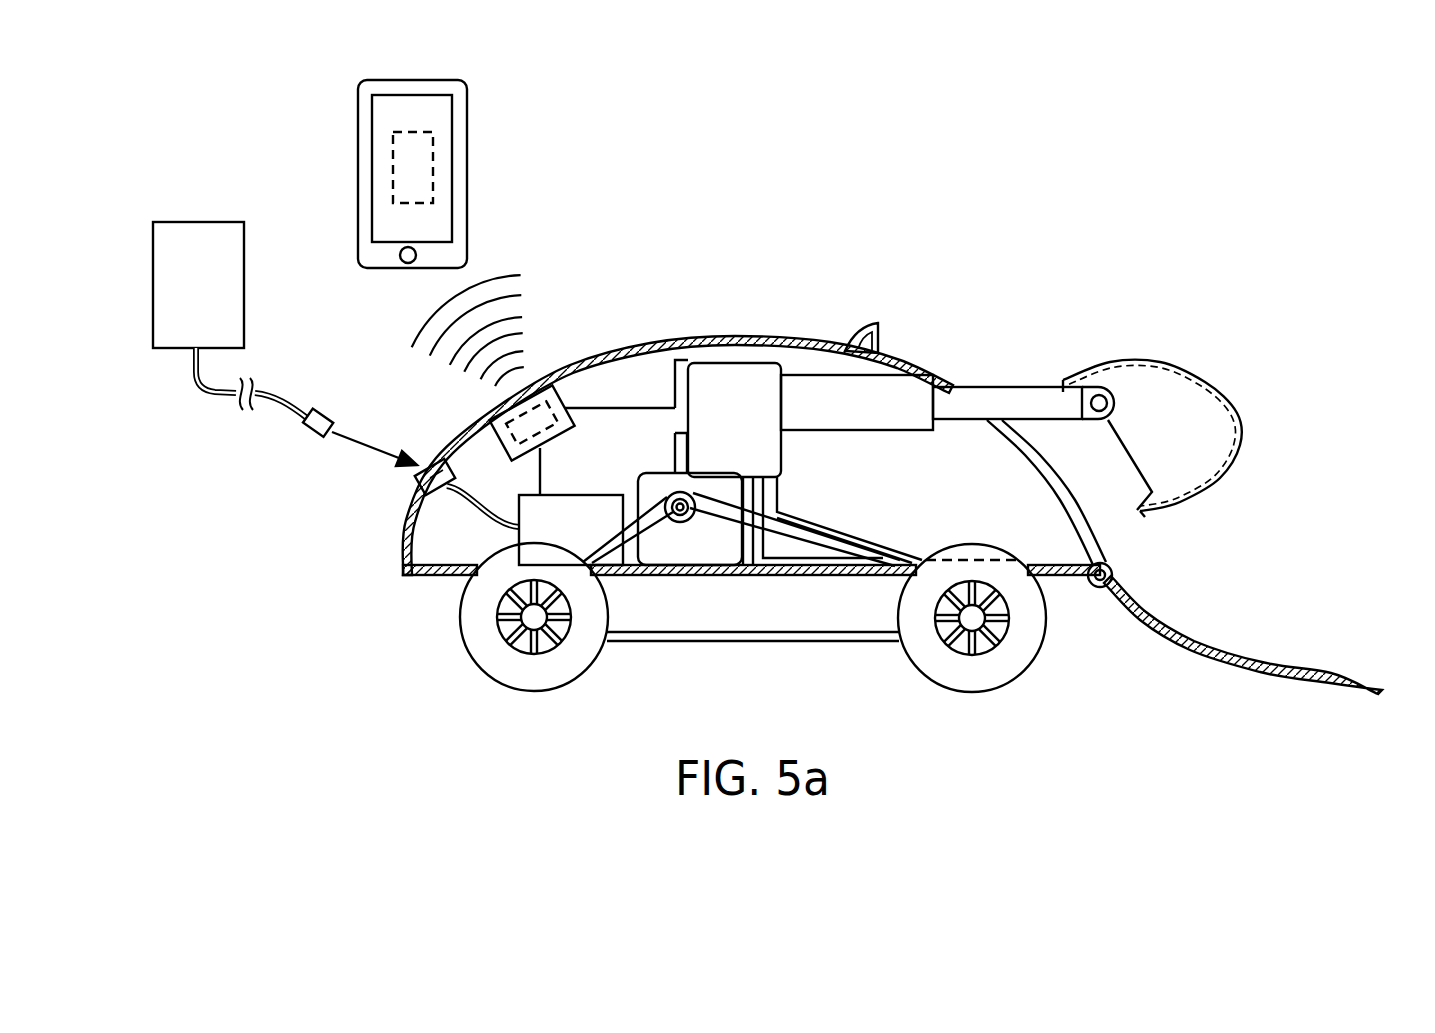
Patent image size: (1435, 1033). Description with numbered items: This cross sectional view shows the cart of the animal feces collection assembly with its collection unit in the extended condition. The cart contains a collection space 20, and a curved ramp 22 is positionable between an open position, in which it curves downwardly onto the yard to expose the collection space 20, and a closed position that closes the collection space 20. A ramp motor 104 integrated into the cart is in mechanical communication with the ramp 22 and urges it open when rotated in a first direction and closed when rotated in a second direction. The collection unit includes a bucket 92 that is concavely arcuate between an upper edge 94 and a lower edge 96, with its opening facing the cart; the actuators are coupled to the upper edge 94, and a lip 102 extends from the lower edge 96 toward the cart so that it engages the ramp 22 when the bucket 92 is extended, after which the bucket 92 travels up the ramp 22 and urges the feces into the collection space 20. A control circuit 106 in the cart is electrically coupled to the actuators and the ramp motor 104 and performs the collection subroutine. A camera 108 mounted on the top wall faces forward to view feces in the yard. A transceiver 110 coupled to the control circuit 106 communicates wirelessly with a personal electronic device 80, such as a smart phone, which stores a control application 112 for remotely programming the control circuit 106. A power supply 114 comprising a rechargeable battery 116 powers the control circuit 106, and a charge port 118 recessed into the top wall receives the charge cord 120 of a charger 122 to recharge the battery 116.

The personal electronic device 80 is at (358, 115).
The control application 112 is at (433, 163).
The charger 122 is at (245, 262).
The charge cord 120 is at (313, 432).
The charge port 118 is at (403, 534).
The transceiver 110 is at (492, 442).
The control circuit 106 is at (565, 392).
The rechargeable battery 116 is at (602, 495).
The camera 108 is at (878, 340).
The upper edge 94 is at (1060, 380).
The bucket 92 is at (1207, 380).
The lower edge 96 is at (1142, 482).
The lip 102 is at (1140, 511).
The ramp motor 104 is at (1112, 573).
The ramp 22 is at (1255, 684).
The collection space 20 is at (1022, 514).
The power supply 114 is at (490, 537).